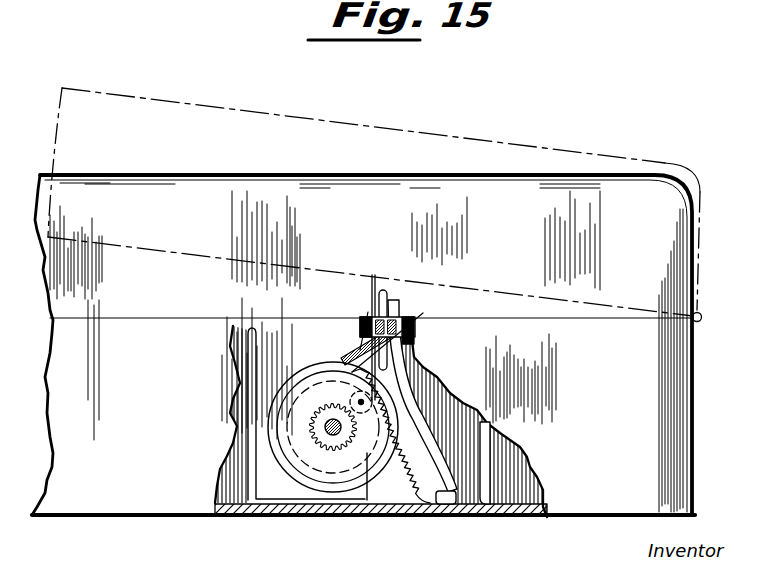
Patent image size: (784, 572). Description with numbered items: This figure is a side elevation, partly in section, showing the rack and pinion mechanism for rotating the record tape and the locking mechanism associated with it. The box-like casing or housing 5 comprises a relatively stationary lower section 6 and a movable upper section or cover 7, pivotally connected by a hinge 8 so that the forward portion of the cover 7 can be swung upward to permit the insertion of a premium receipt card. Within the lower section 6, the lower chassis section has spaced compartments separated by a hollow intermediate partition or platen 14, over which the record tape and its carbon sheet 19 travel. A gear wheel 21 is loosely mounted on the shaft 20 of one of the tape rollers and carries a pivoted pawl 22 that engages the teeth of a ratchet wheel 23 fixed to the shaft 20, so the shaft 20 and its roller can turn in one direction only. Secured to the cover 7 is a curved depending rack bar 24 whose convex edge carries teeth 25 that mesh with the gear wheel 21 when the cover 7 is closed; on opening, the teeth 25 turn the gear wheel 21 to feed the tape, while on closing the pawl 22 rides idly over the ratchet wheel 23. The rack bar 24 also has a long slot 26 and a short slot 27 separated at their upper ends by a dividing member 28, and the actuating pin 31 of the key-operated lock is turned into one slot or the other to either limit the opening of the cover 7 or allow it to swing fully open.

The box-like casing or housing 5 is at (684, 159).
The stationary lower section 6 is at (648, 432).
The movable upper section or cover 7 is at (592, 191).
The hinge 8 is at (701, 312).
The hollow intermediate partition or platen 14 is at (491, 461).
The carbon sheet 19 is at (350, 347).
The shaft 20 is at (333, 427).
The gear wheel 21 is at (320, 390).
The pawl 22 is at (365, 490).
The ratchet wheel 23 is at (270, 437).
The curved depending rack bar 24 is at (441, 503).
The teeth 25 is at (400, 462).
The long slot 26 is at (413, 336).
The short slot 27 is at (368, 312).
The dividing member 28 is at (423, 313).
The actuating pin 31 is at (400, 312).